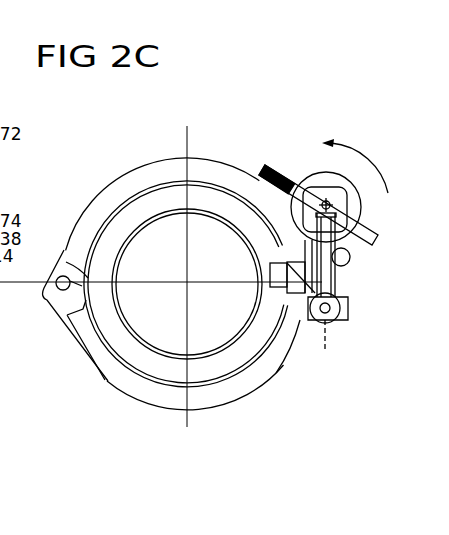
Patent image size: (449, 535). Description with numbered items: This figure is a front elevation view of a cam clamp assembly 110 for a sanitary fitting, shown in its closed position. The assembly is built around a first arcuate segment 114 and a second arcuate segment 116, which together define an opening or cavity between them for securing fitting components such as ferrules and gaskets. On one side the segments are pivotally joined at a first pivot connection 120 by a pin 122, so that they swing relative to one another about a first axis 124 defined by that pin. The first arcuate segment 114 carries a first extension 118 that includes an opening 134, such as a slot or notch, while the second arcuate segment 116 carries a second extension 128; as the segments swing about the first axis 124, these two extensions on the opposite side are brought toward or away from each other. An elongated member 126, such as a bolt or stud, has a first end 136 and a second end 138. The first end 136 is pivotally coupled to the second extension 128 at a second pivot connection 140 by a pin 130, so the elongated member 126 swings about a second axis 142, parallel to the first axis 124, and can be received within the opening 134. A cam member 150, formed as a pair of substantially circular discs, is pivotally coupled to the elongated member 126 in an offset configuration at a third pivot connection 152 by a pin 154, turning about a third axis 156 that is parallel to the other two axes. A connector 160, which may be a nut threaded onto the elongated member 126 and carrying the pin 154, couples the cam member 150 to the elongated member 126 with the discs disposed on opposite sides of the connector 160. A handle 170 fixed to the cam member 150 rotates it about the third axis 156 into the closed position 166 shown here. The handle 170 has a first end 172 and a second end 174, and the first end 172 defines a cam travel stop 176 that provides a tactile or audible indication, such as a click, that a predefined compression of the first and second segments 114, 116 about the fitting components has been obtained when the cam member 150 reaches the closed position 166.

The cam clamp assembly 110 is at (280, 86).
The first arcuate segment 114 is at (70, 238).
The second arcuate segment 116 is at (108, 383).
The first extension 118 is at (352, 270).
The first pivot connection 120 is at (38, 330).
The pin 122 is at (60, 277).
The first axis 124 is at (116, 289).
The elongated member 126 is at (272, 251).
The second extension 128 is at (340, 318).
The pin 130 is at (325, 322).
The opening 134 is at (346, 263).
The first end 136 is at (300, 262).
The second end 138 is at (322, 206).
The second pivot connection 140 is at (283, 383).
The second axis 142 is at (258, 306).
The cam member 150 is at (360, 152).
The third pivot connection 152 is at (312, 156).
The pin 154 is at (330, 205).
The third axis 156 is at (337, 187).
The connector 160 is at (296, 190).
The closed position 166 is at (368, 302).
The handle 170 is at (380, 236).
The first end 172 is at (270, 172).
The second end 174 is at (375, 243).
The cam travel stop 176 is at (250, 166).